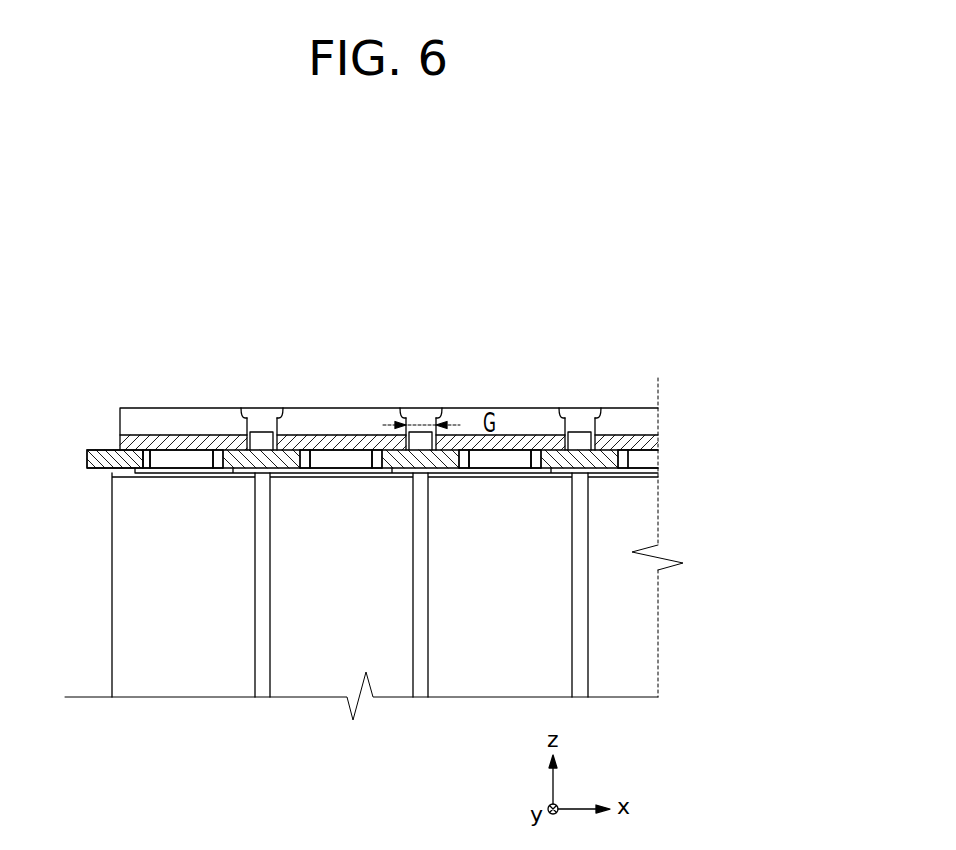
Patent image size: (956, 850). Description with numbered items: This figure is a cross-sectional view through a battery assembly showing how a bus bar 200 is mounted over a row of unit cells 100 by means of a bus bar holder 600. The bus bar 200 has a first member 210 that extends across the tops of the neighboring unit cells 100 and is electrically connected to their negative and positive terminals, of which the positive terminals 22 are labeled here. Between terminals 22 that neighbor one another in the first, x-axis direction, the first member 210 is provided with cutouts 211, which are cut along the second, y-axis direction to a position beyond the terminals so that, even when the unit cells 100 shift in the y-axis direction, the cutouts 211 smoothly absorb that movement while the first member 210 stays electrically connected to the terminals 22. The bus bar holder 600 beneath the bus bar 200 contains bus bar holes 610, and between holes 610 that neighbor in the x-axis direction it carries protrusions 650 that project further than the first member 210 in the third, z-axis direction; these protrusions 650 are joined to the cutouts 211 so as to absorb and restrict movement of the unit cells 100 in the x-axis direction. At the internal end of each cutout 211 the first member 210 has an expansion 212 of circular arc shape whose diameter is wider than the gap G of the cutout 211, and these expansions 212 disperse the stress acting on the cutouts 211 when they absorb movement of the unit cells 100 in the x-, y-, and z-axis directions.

The unit cell 100 is at (179, 672).
The bus bar 200 is at (389, 378).
The first member 210 is at (178, 440).
The cutout 211 is at (281, 416).
The expansion 212 is at (424, 409).
The positive terminal 22 is at (163, 458).
The bus bar holder 600 is at (97, 447).
The bus bar hole 610 is at (208, 455).
The protrusion 650 is at (262, 437).